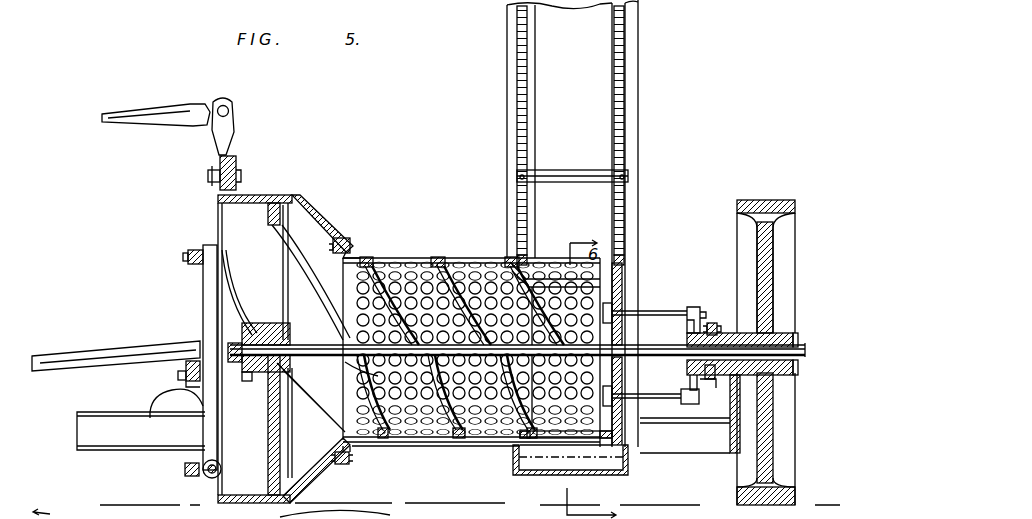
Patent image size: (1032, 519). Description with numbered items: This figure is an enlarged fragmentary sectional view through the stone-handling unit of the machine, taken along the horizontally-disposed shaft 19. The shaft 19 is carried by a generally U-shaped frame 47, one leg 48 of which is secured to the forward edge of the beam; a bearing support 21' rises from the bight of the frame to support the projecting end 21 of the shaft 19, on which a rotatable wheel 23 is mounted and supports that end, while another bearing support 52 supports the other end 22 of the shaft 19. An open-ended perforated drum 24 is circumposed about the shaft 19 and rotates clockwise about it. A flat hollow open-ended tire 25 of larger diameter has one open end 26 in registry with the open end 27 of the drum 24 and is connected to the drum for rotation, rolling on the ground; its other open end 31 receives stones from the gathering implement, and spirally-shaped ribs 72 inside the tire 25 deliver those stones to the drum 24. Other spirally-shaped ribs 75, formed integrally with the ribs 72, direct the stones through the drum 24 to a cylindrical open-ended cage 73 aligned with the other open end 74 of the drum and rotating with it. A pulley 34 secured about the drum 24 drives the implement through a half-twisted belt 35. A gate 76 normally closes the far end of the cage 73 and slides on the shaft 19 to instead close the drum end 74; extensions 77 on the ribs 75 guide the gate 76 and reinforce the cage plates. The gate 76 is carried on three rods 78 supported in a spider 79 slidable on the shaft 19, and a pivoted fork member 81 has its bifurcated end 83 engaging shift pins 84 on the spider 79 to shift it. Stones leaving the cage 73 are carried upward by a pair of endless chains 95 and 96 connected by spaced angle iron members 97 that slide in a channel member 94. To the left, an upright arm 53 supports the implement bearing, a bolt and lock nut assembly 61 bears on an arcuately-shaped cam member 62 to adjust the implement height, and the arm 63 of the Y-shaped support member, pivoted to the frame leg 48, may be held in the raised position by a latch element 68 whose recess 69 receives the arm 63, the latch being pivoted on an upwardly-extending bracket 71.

The latch element 68 is at (194, 105).
The recess 69 is at (227, 104).
The upwardly-extending bracket 71 is at (230, 139).
The flat hollow open-ended tire 25 is at (257, 197).
The other open end of the tire 31 is at (224, 207).
The other end of the shaft 22 is at (231, 357).
The spirally-shaped ribs 72 is at (233, 284).
The bearing support 52 is at (250, 324).
The shaft 19 is at (648, 344).
The upright arm 53 is at (205, 309).
The arm of the Y-shaped support member 63 is at (95, 352).
The leg of the U-shaped frame 48 is at (145, 450).
The bolt and lock nut assembly 61 is at (180, 374).
The arcuately-shaped cam member 62 is at (148, 397).
The perforated drum 24 is at (404, 257).
The spirally-shaped ribs 75 is at (459, 257).
The open end of the drum 27 is at (370, 256).
The open end of the tire 26 is at (337, 237).
The pulley 34 is at (353, 457).
The belt 35 is at (344, 465).
The endless chain 96 is at (533, 103).
The endless chain 95 is at (638, 112).
The angle iron members 97 is at (564, 171).
The other open end of the drum 74 is at (537, 262).
The extensions 77 is at (555, 290).
The cylindrical open-ended cage 73 is at (556, 438).
The channel member 94 is at (627, 476).
The gate 76 is at (597, 300).
The rods 78 is at (676, 297).
The fork member 81 is at (721, 320).
The spider 79 is at (683, 389).
The shift pins 84 is at (710, 385).
The bifurcated end 83 is at (719, 382).
The projecting end of the shaft 21 is at (752, 351).
The rotatable wheel 23 is at (737, 213).
The bearing support 21' is at (763, 414).
The U-shaped frame 47 is at (742, 437).